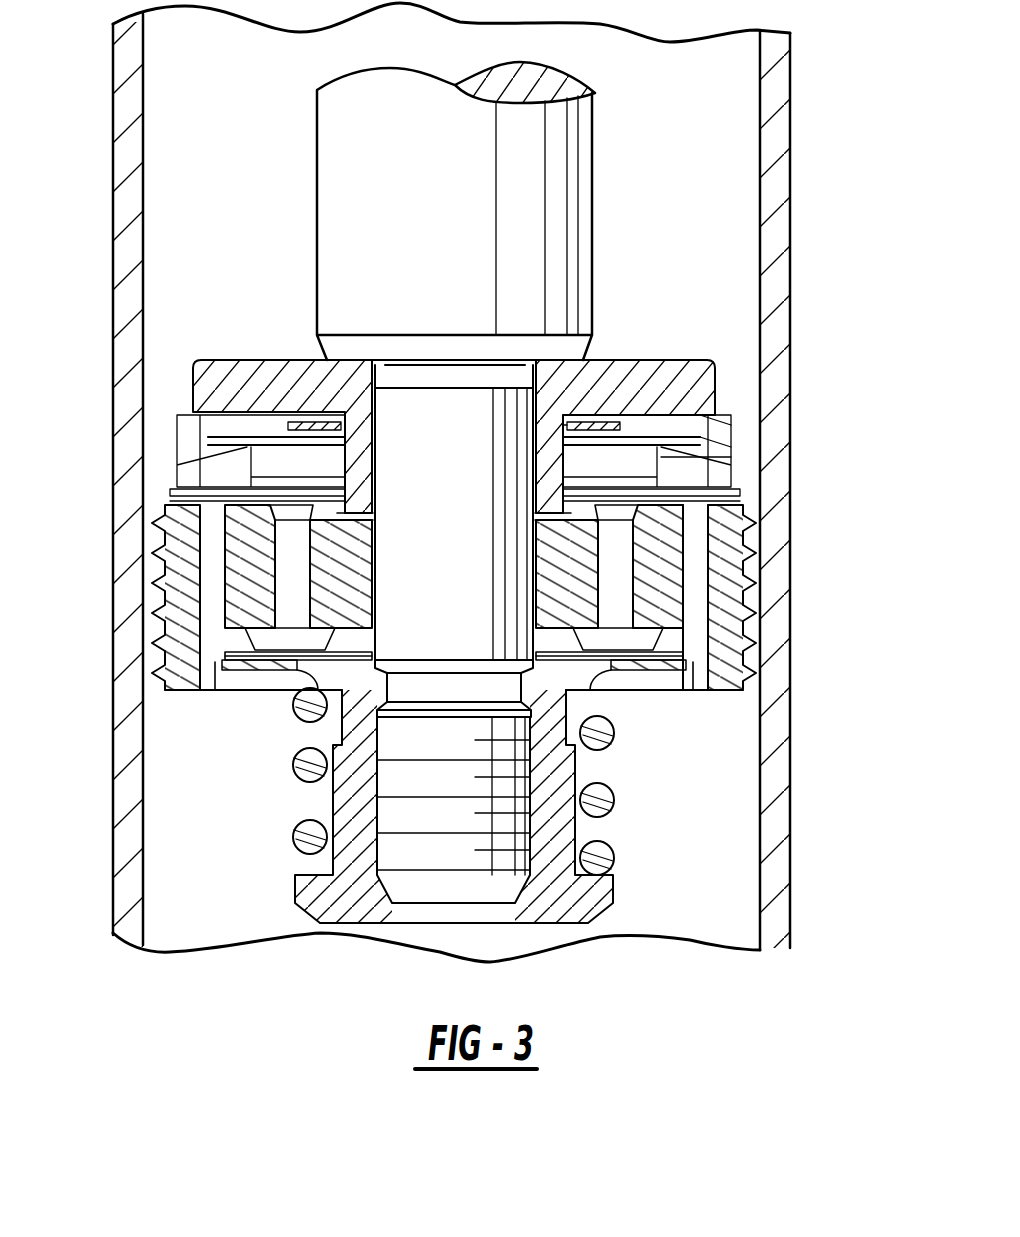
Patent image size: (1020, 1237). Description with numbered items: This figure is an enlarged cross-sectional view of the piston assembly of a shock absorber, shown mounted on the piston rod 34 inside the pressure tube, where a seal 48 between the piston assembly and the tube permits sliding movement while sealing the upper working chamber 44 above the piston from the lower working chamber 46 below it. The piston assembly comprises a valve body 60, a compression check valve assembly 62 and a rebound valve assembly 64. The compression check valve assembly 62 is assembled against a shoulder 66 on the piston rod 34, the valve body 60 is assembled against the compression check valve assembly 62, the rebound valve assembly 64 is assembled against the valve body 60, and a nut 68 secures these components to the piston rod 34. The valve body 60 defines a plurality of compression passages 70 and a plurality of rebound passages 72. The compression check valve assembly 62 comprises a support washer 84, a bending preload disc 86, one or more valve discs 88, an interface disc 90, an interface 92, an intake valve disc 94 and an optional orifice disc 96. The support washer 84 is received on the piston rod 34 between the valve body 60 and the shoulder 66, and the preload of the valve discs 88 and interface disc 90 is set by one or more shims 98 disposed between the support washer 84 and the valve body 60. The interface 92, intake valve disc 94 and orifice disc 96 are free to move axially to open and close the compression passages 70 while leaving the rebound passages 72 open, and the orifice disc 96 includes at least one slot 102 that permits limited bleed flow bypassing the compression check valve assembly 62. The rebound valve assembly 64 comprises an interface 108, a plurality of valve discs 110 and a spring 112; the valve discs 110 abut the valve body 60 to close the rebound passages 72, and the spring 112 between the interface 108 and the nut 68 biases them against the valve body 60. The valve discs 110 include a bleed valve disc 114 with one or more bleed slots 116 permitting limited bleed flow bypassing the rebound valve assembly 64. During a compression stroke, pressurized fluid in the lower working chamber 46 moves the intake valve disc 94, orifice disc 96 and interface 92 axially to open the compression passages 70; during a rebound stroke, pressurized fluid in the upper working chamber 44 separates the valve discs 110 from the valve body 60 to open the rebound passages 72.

The piston rod 34 is at (384, 220).
The upper working chamber 44 is at (222, 153).
The lower working chamber 46 is at (194, 834).
The seal 48 is at (150, 530).
The valve body 60 is at (181, 612).
The compression check valve assembly 62 is at (715, 288).
The rebound valve assembly 64 is at (241, 716).
The shoulder 66 is at (407, 362).
The nut 68 is at (585, 905).
The compression passages 70 is at (690, 563).
The rebound passages 72 is at (610, 595).
The support washer 84 is at (563, 517).
The bending preload disc 86 is at (623, 383).
The valve discs 88 is at (570, 440).
The interface disc 90 is at (690, 450).
The interface 92 is at (720, 463).
The intake valve disc 94 is at (711, 493).
The orifice disc 96 is at (742, 532).
The shims 98 is at (565, 422).
The slot 102 is at (181, 486).
The interface 108 is at (250, 683).
The valve discs 110 is at (643, 653).
The spring 112 is at (613, 853).
The bleed valve disc 114 is at (300, 628).
The bleed slots 116 is at (240, 645).